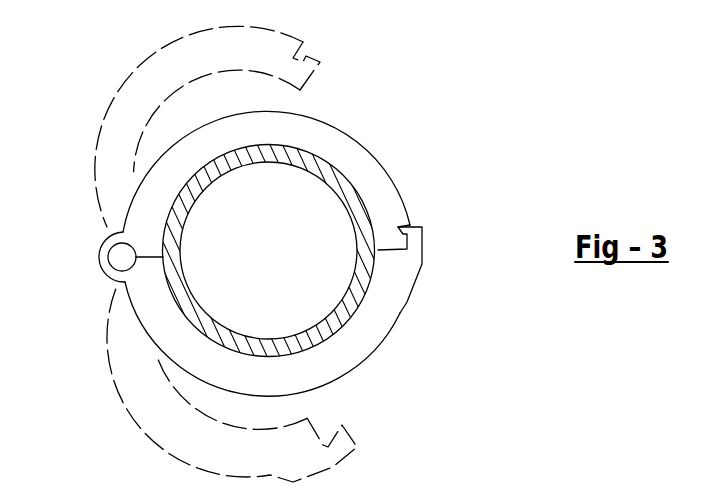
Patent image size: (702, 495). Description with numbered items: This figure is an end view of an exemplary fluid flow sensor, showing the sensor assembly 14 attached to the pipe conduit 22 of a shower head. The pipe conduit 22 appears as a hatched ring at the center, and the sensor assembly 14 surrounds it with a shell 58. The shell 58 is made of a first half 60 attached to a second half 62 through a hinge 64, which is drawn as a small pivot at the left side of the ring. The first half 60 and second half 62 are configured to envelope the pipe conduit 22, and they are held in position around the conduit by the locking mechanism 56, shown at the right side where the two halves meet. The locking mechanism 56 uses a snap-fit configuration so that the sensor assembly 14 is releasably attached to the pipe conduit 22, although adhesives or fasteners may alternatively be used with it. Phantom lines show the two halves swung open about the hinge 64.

The sensor assembly 14 is at (303, 254).
The pipe conduit 22 is at (358, 302).
The locking mechanism 56 is at (415, 235).
The shell 58 is at (405, 184).
The first half 60 is at (370, 148).
The second half 62 is at (340, 355).
The hinge 64 is at (120, 257).